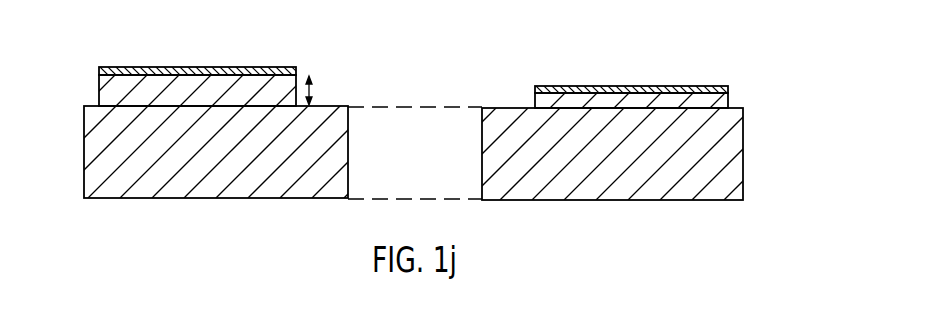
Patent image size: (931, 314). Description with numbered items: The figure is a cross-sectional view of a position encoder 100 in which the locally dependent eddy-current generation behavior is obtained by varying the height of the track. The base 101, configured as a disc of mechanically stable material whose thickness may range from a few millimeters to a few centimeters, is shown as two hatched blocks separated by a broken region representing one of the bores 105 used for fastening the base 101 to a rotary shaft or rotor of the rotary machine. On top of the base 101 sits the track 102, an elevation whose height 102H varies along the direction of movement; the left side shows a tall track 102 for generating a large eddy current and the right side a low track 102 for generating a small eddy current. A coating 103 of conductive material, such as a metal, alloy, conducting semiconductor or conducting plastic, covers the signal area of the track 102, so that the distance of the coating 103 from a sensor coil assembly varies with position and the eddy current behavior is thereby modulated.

The position encoder 100 is at (760, 53).
The base 101 is at (735, 170).
The track 102 is at (100, 83).
The height of the track 102H is at (312, 92).
The coating 103 is at (140, 67).
The bores 105 is at (432, 169).